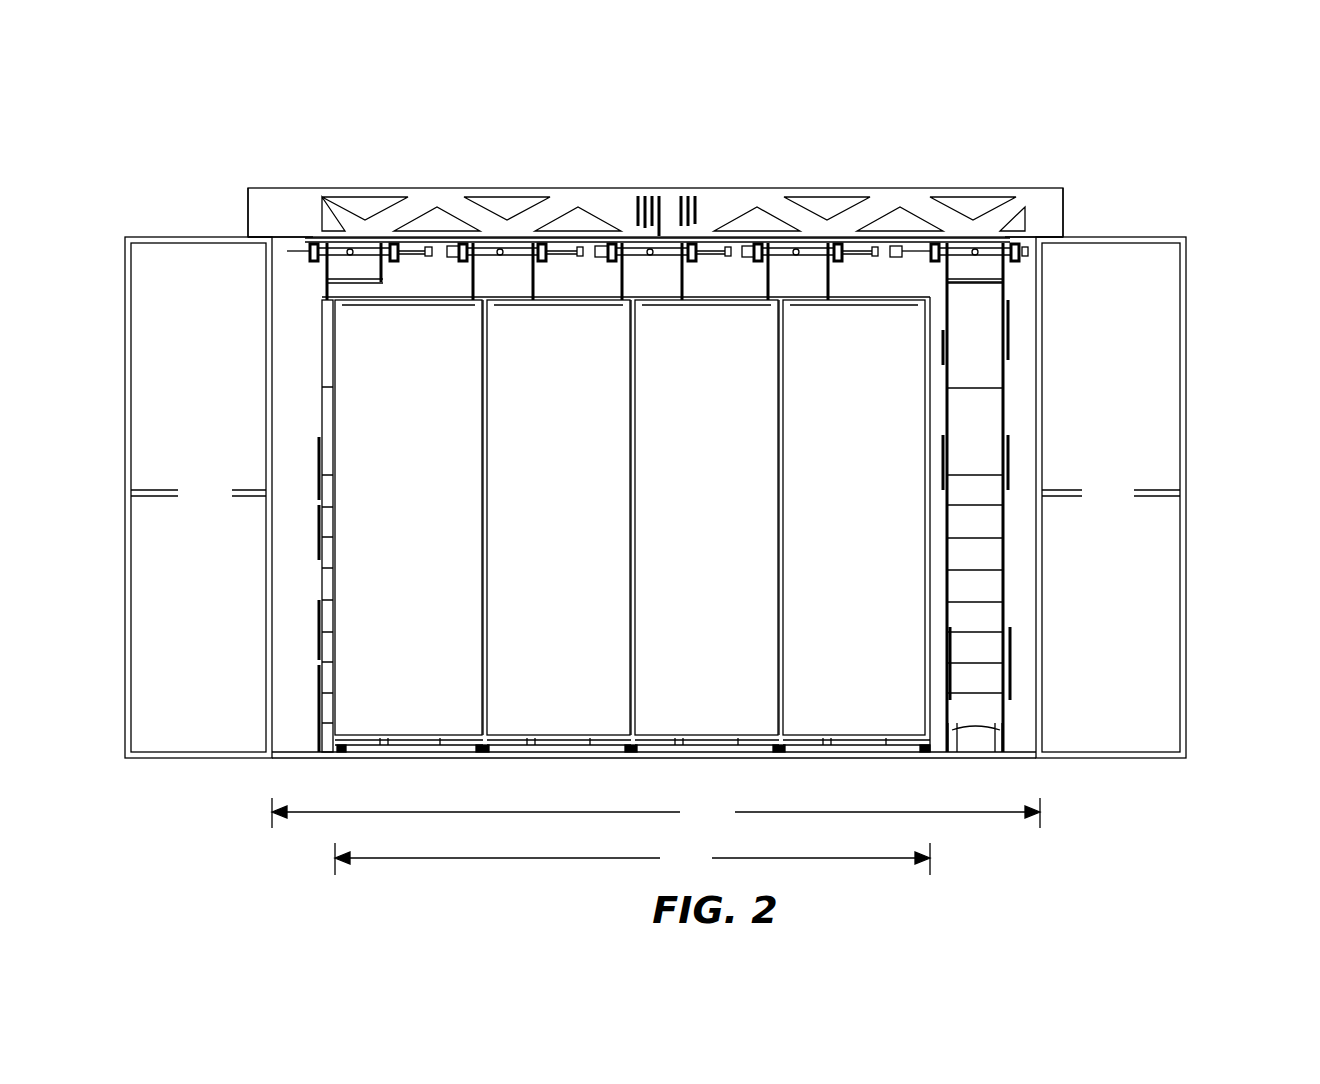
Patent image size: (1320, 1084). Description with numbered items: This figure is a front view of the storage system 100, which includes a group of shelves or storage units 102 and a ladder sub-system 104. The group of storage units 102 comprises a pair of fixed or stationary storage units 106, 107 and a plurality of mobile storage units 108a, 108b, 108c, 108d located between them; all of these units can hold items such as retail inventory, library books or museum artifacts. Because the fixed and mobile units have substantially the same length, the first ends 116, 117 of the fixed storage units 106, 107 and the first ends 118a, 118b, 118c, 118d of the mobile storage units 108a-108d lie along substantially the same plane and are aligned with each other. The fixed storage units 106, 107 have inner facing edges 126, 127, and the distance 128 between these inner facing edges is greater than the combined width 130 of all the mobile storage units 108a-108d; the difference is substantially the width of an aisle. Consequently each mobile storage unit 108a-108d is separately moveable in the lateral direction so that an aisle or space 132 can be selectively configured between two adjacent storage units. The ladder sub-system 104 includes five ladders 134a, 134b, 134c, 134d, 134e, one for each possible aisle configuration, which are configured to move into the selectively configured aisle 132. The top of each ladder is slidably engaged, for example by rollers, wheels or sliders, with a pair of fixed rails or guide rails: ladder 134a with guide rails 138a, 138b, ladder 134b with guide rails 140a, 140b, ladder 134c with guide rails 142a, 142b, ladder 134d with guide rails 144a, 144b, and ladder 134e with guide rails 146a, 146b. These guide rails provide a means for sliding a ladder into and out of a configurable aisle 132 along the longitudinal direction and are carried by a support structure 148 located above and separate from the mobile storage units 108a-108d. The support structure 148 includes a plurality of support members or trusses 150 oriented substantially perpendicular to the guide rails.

The storage system 100 is at (1180, 165).
The group of shelves or storage units 102 is at (1255, 662).
The ladder sub-system 104 is at (990, 135).
The fixed storage unit 106 is at (1153, 545).
The fixed storage unit 107 is at (187, 687).
The mobile storage unit 108a is at (838, 703).
The mobile storage unit 108b is at (690, 703).
The mobile storage unit 108c is at (545, 703).
The mobile storage unit 108d is at (400, 703).
The first end of fixed storage unit 116 is at (1111, 497).
The first end of fixed storage unit 117 is at (198, 497).
The first end of mobile storage unit 118a is at (918, 519).
The first end of mobile storage unit 118b is at (771, 519).
The first end of mobile storage unit 118c is at (623, 519).
The first end of mobile storage unit 118d is at (475, 519).
The inner facing edge 126 is at (1040, 697).
The inner facing edge 127 is at (273, 292).
The distance between inner facing edges 128 is at (656, 813).
The combined width of mobile storage units 130 is at (632, 859).
The aisle or space 132 is at (975, 370).
The ladder 134a is at (945, 272).
The ladder 134b is at (770, 271).
The ladder 134c is at (622, 273).
The ladder 134d is at (473, 271).
The ladder 134e is at (383, 273).
The fixed rail or guide rail 138a is at (1015, 247).
The fixed rail or guide rail 138b is at (935, 247).
The fixed rail or guide rail 140a is at (838, 247).
The fixed rail or guide rail 140b is at (758, 247).
The fixed rail or guide rail 142a is at (692, 247).
The fixed rail or guide rail 142b is at (612, 247).
The fixed rail or guide rail 144a is at (542, 247).
The fixed rail or guide rail 144b is at (462, 247).
The fixed rail or guide rail 146a is at (394, 245).
The fixed rail or guide rail 146b is at (314, 245).
The support structure 148 is at (247, 214).
The support member or truss 150 is at (1055, 198).